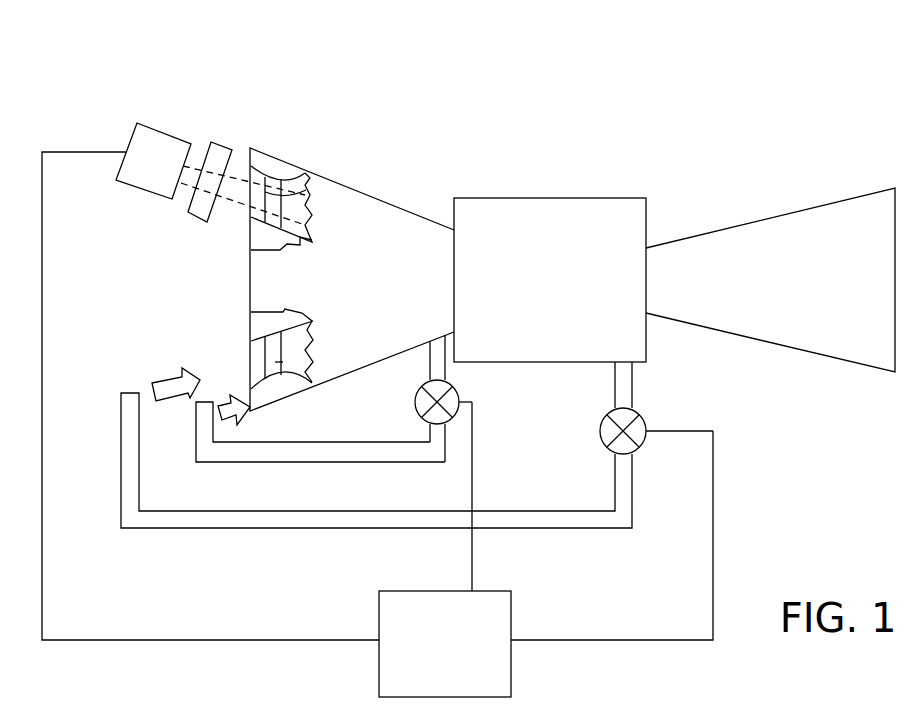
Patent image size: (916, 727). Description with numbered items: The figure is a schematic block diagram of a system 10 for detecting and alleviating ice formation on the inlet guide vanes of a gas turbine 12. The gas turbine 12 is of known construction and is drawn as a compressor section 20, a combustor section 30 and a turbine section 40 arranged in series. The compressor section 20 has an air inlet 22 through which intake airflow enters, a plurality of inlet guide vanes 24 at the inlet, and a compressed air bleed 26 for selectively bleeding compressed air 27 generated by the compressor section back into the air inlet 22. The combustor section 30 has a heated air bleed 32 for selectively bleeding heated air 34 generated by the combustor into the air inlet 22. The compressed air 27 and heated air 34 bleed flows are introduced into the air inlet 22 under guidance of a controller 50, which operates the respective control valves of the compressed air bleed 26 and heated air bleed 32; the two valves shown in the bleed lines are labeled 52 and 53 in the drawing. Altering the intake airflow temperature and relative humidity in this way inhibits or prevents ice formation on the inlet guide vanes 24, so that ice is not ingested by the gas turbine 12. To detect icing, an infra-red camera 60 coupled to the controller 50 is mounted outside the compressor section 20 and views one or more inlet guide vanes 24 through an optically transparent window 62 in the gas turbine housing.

The system 10 is at (559, 100).
The gas turbine 12 is at (633, 140).
The compressor section 20 is at (397, 227).
The air inlet 22 is at (212, 272).
The inlet guide vanes 24 is at (312, 193).
The compressed air bleed 26 is at (440, 362).
The compressed air 27 is at (225, 395).
The combustor section 30 is at (508, 215).
The heated air bleed 32 is at (626, 394).
The heated air 34 is at (168, 385).
The turbine section 40 is at (762, 235).
The controller 50 is at (500, 678).
The valve 52 is at (453, 402).
The valve 53 is at (642, 430).
The infra-red camera 60 is at (165, 137).
The optically transparent window 62 is at (218, 150).